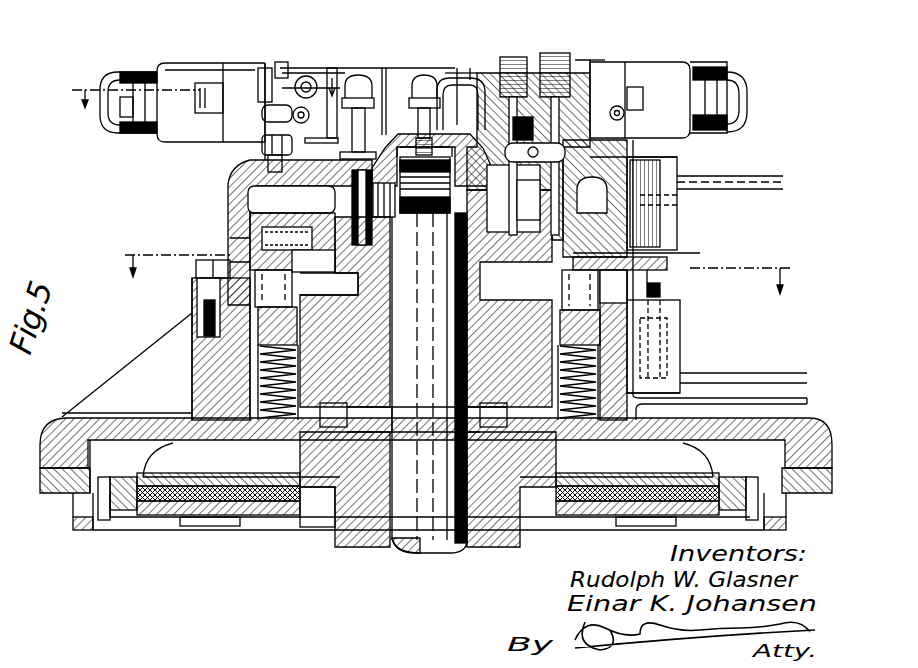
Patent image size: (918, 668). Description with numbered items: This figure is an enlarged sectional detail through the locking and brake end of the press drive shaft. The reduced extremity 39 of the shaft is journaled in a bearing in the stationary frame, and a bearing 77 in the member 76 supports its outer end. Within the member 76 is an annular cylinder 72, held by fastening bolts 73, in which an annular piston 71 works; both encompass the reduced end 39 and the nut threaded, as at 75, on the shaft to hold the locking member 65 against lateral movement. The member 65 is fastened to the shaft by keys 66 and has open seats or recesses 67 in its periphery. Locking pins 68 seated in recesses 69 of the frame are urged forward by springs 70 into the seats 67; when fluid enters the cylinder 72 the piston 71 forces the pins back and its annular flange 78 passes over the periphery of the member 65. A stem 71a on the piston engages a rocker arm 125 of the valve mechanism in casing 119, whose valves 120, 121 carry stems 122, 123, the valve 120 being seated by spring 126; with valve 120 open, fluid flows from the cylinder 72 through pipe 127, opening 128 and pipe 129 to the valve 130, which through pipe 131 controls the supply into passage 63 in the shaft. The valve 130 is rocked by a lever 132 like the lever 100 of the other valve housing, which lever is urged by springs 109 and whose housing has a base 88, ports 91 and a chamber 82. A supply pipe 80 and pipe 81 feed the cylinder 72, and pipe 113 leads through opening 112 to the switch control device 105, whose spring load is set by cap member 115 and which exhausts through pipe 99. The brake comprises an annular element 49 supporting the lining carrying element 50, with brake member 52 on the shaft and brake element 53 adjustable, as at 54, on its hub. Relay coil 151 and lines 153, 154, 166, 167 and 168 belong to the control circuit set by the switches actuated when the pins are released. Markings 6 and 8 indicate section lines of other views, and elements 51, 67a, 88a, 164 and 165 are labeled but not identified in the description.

The section line 6- 6 is at (454, 262).
The section line 8- 8 is at (134, 80).
The reduced extremity 39 is at (433, 320).
The annular element 49 is at (78, 530).
The brake lining carrying element 50 is at (130, 475).
The bearing retainer 51 is at (116, 520).
The brake member 52 is at (238, 482).
The brake element 53 is at (166, 517).
The lateral adjustment 54 is at (322, 528).
The passage 63 is at (378, 547).
The locking member 65 is at (325, 300).
The keys 66 is at (446, 252).
The recesses 67 is at (276, 345).
The spring bolt 67a is at (570, 345).
The locking pins 68 is at (225, 362).
The recesses 69 is at (250, 398).
The springs 70 is at (548, 245).
The piston 71 is at (230, 228).
The stem 71a is at (618, 152).
The cylinder 72 is at (321, 221).
The fastening bolts 73 is at (196, 268).
The screw threads 75 is at (410, 214).
The member 76 is at (374, 88).
The bearing 77 is at (438, 100).
The annular flange 78 is at (228, 250).
The supply pipe 80 is at (617, 62).
The pipe 81 is at (262, 112).
The chamber 82 is at (262, 145).
The base 88 is at (236, 63).
The cylinder wall 88a is at (190, 63).
The openings 91 is at (58, 418).
The pipe 99 is at (266, 68).
The lever 100 is at (128, 133).
The switch control device 105 is at (332, 70).
The springs 109 is at (140, 72).
The opening 112 is at (461, 106).
The pipe 113 is at (375, 66).
The cap member 115 is at (282, 62).
The casing 119 is at (583, 60).
The valve 120 is at (490, 73).
The valve 121 is at (550, 53).
The stem 122 is at (562, 53).
The stem 123 is at (598, 60).
The rocker arm 125 is at (535, 168).
The spring 126 is at (510, 57).
The pipe 127 is at (527, 57).
The opening 128 is at (448, 68).
The pipe 129 is at (470, 68).
The valve 130 is at (668, 62).
The pipe 131 is at (391, 68).
The lever 132 is at (745, 96).
The relay coil 151 is at (800, 402).
The line 153 is at (752, 373).
The line 154 is at (778, 398).
The passage 164 is at (663, 272).
The valve block 165 is at (668, 345).
The line 166 is at (680, 372).
The line 167 is at (715, 176).
The line 168 is at (716, 189).